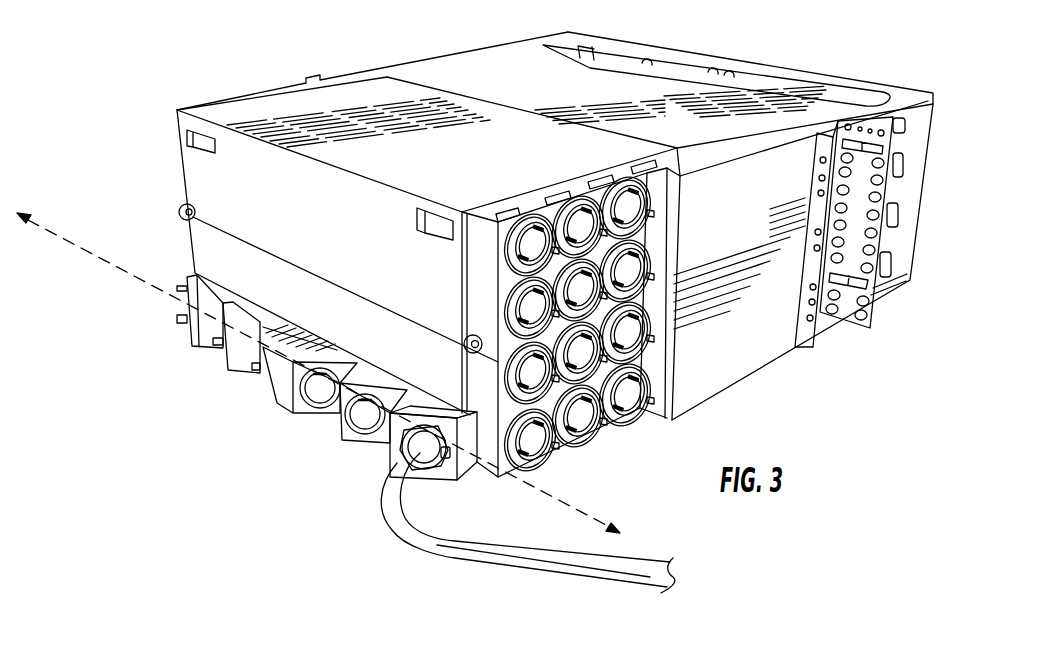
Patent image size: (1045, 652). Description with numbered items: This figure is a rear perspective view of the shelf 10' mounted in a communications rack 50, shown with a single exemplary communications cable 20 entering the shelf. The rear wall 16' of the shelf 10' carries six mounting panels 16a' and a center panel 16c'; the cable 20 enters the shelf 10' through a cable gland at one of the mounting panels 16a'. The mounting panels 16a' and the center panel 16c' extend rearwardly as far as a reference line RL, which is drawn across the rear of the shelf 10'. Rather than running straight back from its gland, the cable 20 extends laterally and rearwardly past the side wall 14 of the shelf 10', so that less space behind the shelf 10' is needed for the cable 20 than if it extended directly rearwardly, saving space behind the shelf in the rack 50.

The communications rack 50 is at (830, 53).
The shelf 10' is at (428, 297).
The rear wall 16' is at (310, 389).
The mounting panel 16a' is at (367, 443).
The center panel 16c' is at (250, 380).
The side wall 14 is at (467, 467).
The cable 20 is at (595, 561).
The reference line RL is at (110, 263).